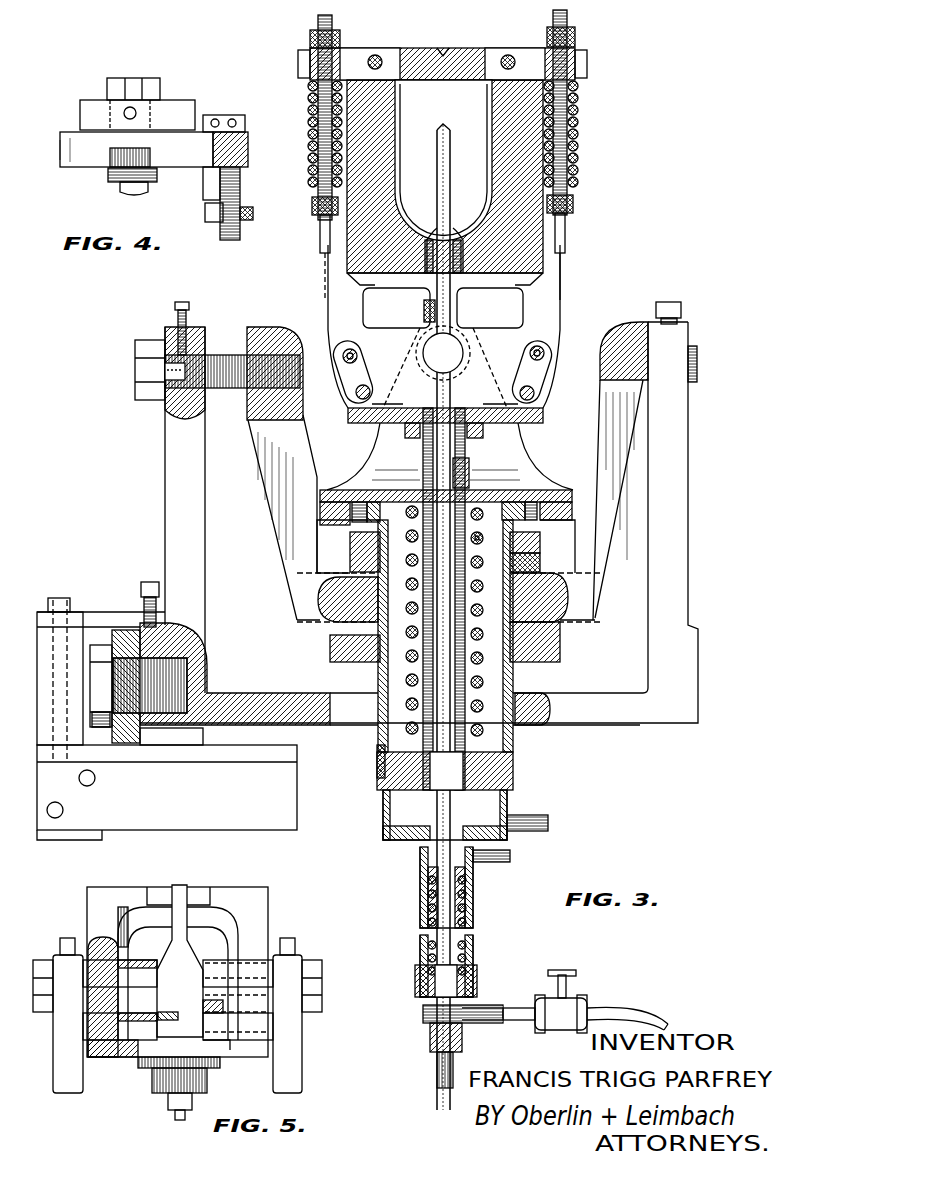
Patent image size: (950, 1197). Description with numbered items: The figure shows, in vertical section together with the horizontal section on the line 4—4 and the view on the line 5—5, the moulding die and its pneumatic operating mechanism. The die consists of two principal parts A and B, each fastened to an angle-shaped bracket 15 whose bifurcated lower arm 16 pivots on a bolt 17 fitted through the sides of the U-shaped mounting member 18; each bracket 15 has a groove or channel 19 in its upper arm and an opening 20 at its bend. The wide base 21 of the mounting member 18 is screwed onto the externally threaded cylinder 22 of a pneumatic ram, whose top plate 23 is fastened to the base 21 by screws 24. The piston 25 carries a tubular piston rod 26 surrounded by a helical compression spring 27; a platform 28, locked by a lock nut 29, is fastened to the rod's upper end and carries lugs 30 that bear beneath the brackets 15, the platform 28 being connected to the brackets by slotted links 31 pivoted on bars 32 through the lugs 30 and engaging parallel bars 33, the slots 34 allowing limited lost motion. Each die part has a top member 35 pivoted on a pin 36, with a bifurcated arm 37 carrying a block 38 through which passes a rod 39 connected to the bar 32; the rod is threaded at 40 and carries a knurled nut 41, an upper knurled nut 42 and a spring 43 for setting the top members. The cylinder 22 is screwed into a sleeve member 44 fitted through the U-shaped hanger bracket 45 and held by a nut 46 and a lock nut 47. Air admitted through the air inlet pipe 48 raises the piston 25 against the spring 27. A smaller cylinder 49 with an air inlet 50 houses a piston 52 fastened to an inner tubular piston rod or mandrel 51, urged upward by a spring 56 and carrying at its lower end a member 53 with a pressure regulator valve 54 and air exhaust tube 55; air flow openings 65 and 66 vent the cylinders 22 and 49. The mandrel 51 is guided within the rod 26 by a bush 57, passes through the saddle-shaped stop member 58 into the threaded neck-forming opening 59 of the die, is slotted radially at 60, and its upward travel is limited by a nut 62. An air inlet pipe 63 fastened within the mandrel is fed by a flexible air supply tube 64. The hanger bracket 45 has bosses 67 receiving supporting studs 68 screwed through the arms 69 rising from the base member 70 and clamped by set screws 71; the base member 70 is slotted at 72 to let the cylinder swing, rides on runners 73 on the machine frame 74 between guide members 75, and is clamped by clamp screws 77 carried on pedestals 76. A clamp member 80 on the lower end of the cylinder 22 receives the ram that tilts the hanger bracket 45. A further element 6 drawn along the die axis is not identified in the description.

In FIG. 3, the glass tube 6 is at (432, 210).
In FIG. 3, the bracket 15 is at (556, 270).
In FIG. 5, the bracket 15 is at (228, 897).
In FIG. 3, the lower arm 16 is at (470, 350).
In FIG. 4, the lower arm 16 is at (72, 184).
In FIG. 5, the lower arm 16 is at (273, 1020).
In FIG. 4, the bolt 17 is at (160, 86).
In FIG. 5, the bolt 17 is at (42, 960).
In FIG. 3, the mounting member 18 is at (483, 432).
In FIG. 4, the mounting member 18 is at (137, 115).
In FIG. 5, the mounting member 18 is at (293, 1060).
In FIG. 3, the groove or channel 19 is at (556, 260).
In FIG. 5, the groove or channel 19 is at (197, 897).
In FIG. 5, the opening 20 is at (238, 925).
In FIG. 3, the base 21 is at (335, 490).
In FIG. 3, the cylinder 22 is at (513, 738).
In FIG. 3, the top plate 23 is at (395, 490).
In FIG. 3, the screws 24 is at (360, 502).
In FIG. 3, the piston 25 is at (513, 765).
In FIG. 3, the tubular piston rod 26 is at (470, 664).
In FIG. 5, the tubular piston rod 26 is at (152, 1090).
In FIG. 3, the helical compression spring 27 is at (484, 690).
In FIG. 3, the platform 28 is at (525, 423).
In FIG. 5, the platform 28 is at (256, 1057).
In FIG. 3, the lock nut 29 is at (405, 430).
In FIG. 5, the lock nut 29 is at (138, 1065).
In FIG. 3, the lugs 30 is at (540, 400).
In FIG. 5, the lugs 30 is at (262, 1032).
In FIG. 3, the slotted links 31 is at (352, 340).
In FIG. 4, the slotted links 31 is at (203, 178).
In FIG. 5, the slotted links 31 is at (135, 960).
In FIG. 3, the bars 32 is at (368, 388).
In FIG. 4, the bars 32 is at (220, 196).
In FIG. 5, the bars 32 is at (215, 1035).
In FIG. 3, the parallel bars 33 is at (357, 356).
In FIG. 5, the parallel bars 33 is at (203, 965).
In FIG. 3, the slot 34 is at (357, 352).
In FIG. 5, the slot 34 is at (150, 960).
In FIG. 3, the top member 35 is at (443, 48).
In FIG. 3, the pin 36 is at (378, 55).
In FIG. 3, the bifurcated arm 37 is at (298, 52).
In FIG. 3, the block 38 is at (298, 60).
In FIG. 3, the rod 39 is at (320, 245).
In FIG. 4, the rod 39 is at (205, 214).
In FIG. 5, the rod 39 is at (180, 961).
In FIG. 3, the screw threaded portion 40 is at (318, 115).
In FIG. 3, the knurled nut 41 is at (312, 212).
In FIG. 3, the upper knurled nut 42 is at (340, 34).
In FIG. 3, the helical compression spring 43 is at (308, 98).
In FIG. 3, the sleeve member 44 is at (560, 643).
In FIG. 3, the hanger bracket 45 is at (592, 608).
In FIG. 3, the nut 46 is at (540, 562).
In FIG. 3, the lock nut 47 is at (540, 540).
In FIG. 3, the air inlet pipe 48 is at (535, 815).
In FIG. 3, the smaller cylinder 49 is at (473, 896).
In FIG. 3, the air inlet 50 is at (510, 855).
In FIG. 3, the inner tubular piston rod or mandrel 51 is at (473, 942).
In FIG. 3, the piston 52 is at (465, 880).
In FIG. 3, the member 53 is at (423, 1016).
In FIG. 3, the pressure regulator valve 54 is at (580, 995).
In FIG. 3, the air exhaust tube 55 is at (625, 1008).
In FIG. 3, the helical compression spring 56 is at (420, 898).
In FIG. 3, the bush 57 is at (468, 469).
In FIG. 3, the stop member 58 is at (470, 294).
In FIG. 4, the stop member 58 is at (112, 180).
In FIG. 3, the opening 59 is at (420, 306).
In FIG. 3, the radial slot 60 is at (452, 235).
In FIG. 3, the nut 62 is at (460, 312).
In FIG. 3, the air inlet pipe 63 is at (425, 998).
In FIG. 3, the flexible air supply tube 64 is at (437, 1070).
In FIG. 3, the air flow opening 65 is at (502, 530).
In FIG. 3, the air flow opening 66 is at (420, 948).
In FIG. 3, the boss 67 is at (270, 330).
In FIG. 3, the supporting stud 68 is at (222, 352).
In FIG. 3, the arms 69 is at (165, 436).
In FIG. 3, the base member 70 is at (260, 697).
In FIG. 3, the set screws 71 is at (182, 302).
In FIG. 3, the longitudinal slot 72 is at (345, 700).
In FIG. 3, the runners 73 is at (130, 745).
In FIG. 3, the machine frame 74 is at (170, 745).
In FIG. 3, the guide members 75 is at (190, 745).
In FIG. 3, the pedestals 76 is at (78, 612).
In FIG. 3, the clamp screws 77 is at (141, 588).
In FIG. 3, the clamp member 80 is at (377, 762).
In FIG. 3, the section line 4— 4 is at (386, 300).
In FIG. 3, the section line 5— 5 is at (576, 243).
In FIG. 3, the die part A is at (385, 172).
In FIG. 3, the die part B is at (500, 172).